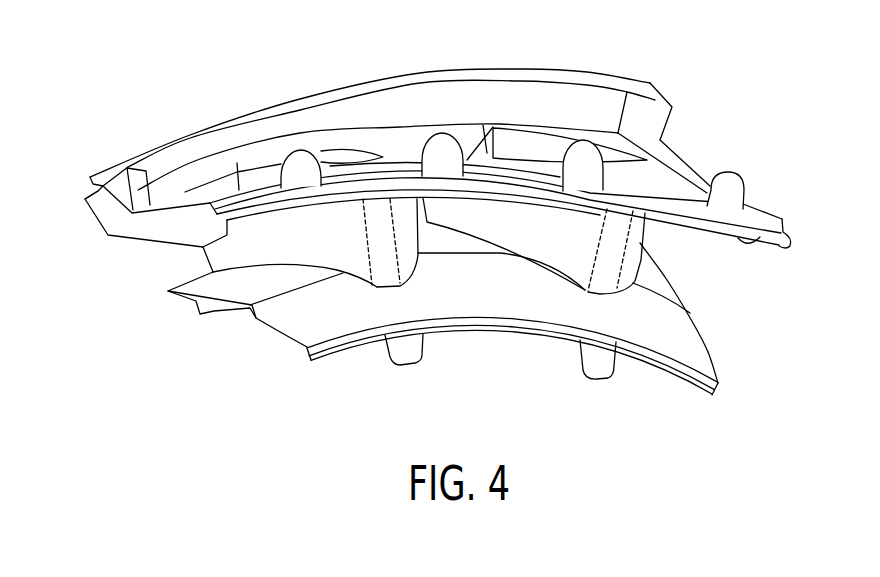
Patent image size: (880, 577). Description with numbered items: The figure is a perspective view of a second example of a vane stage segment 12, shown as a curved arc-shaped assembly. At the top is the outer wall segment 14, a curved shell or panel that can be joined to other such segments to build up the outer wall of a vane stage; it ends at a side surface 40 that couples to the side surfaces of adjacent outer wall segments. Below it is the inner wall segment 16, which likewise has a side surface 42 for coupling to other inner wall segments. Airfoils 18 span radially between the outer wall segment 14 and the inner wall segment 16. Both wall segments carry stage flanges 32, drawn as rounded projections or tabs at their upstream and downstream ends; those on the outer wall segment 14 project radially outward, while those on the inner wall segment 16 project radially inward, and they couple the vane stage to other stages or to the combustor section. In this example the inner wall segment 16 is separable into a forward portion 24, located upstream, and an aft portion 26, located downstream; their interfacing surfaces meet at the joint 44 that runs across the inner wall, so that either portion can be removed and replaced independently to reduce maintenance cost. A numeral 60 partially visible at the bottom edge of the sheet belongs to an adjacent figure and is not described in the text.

The vane stage segment 12 is at (78, 108).
The outer wall segment 14 is at (615, 75).
The inner wall segment 16 is at (175, 370).
The airfoils 18 is at (357, 265).
The forward portion 24 is at (710, 353).
The aft portion 26 is at (678, 290).
The stage flanges 32 is at (443, 130).
The side surface 40 is at (113, 223).
The side surface 42 is at (197, 303).
The joint 44 is at (500, 257).
The element of adjacent figure 60 is at (347, 573).